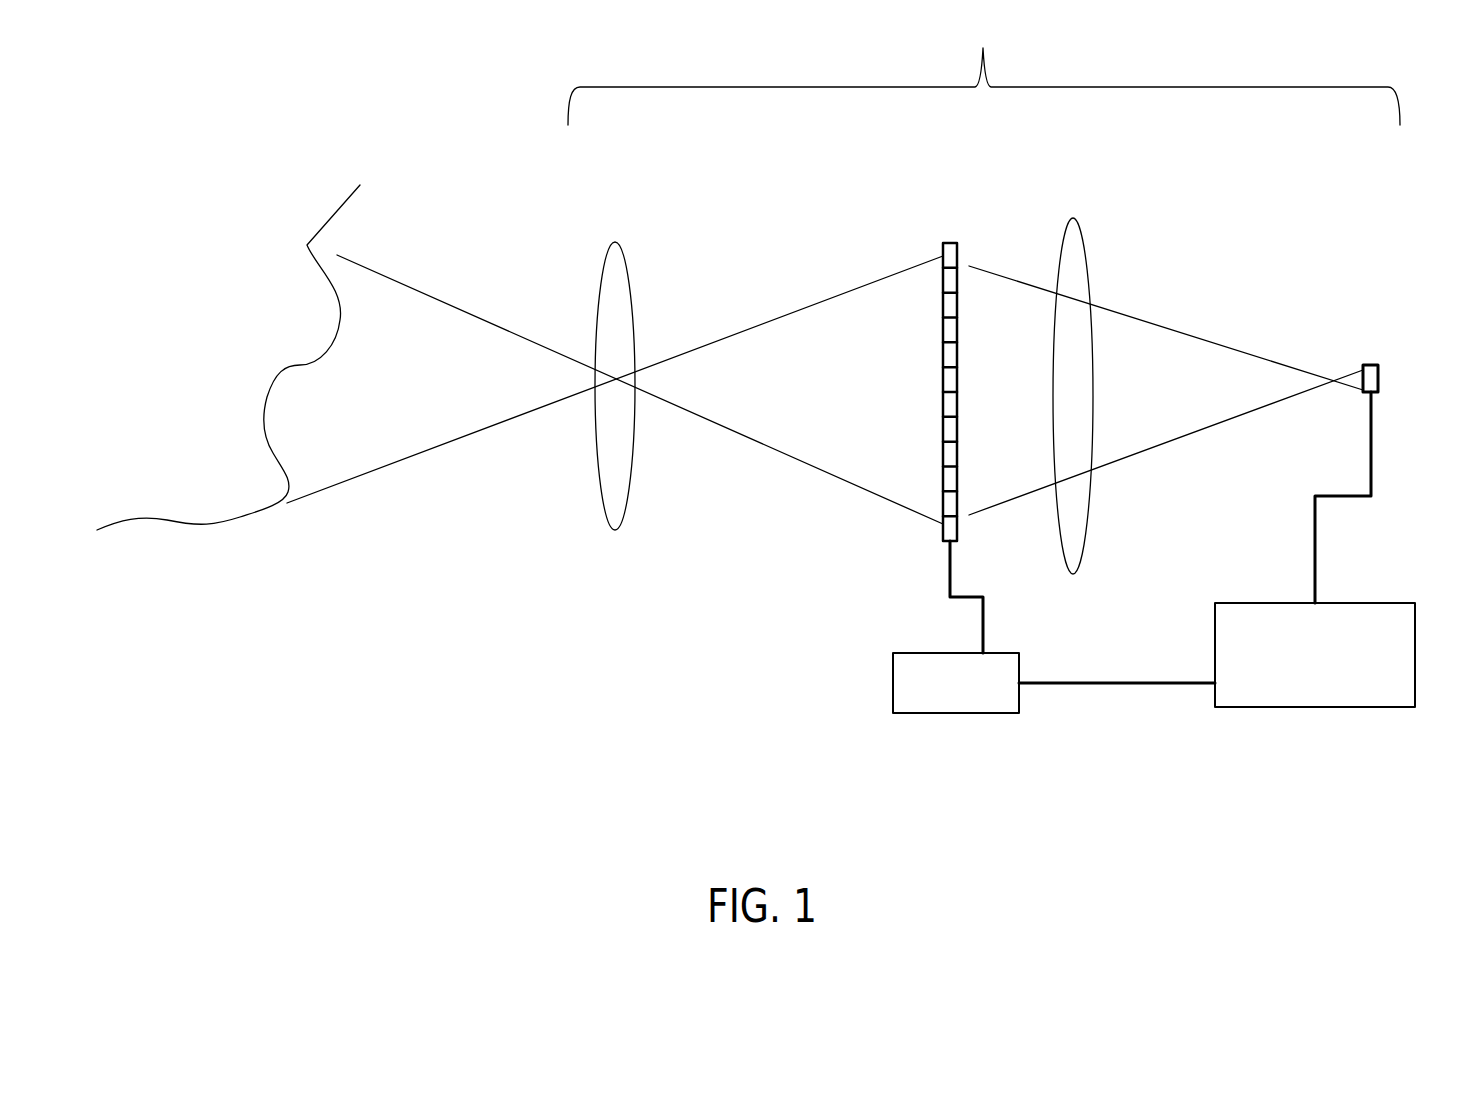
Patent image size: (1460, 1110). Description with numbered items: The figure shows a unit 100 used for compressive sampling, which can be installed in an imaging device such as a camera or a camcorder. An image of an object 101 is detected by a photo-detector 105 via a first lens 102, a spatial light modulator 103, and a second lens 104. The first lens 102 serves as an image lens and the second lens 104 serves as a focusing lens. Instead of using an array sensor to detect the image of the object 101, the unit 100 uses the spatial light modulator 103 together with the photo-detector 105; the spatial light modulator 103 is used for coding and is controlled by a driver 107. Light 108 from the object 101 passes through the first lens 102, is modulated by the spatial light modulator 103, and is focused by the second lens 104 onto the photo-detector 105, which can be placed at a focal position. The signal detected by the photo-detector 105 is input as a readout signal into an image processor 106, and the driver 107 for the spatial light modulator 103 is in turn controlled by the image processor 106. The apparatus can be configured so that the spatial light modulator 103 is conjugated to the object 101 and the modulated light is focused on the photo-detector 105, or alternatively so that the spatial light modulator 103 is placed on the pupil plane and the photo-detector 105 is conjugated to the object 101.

The unit 100 is at (984, 62).
The object 101 is at (228, 403).
The first lens 102 is at (648, 339).
The spatial light modulator 103 is at (976, 344).
The second lens 104 is at (1110, 354).
The photo-detector 105 is at (1310, 375).
The image processor 106 is at (1315, 708).
The driver 107 is at (956, 734).
The light 108 is at (825, 394).